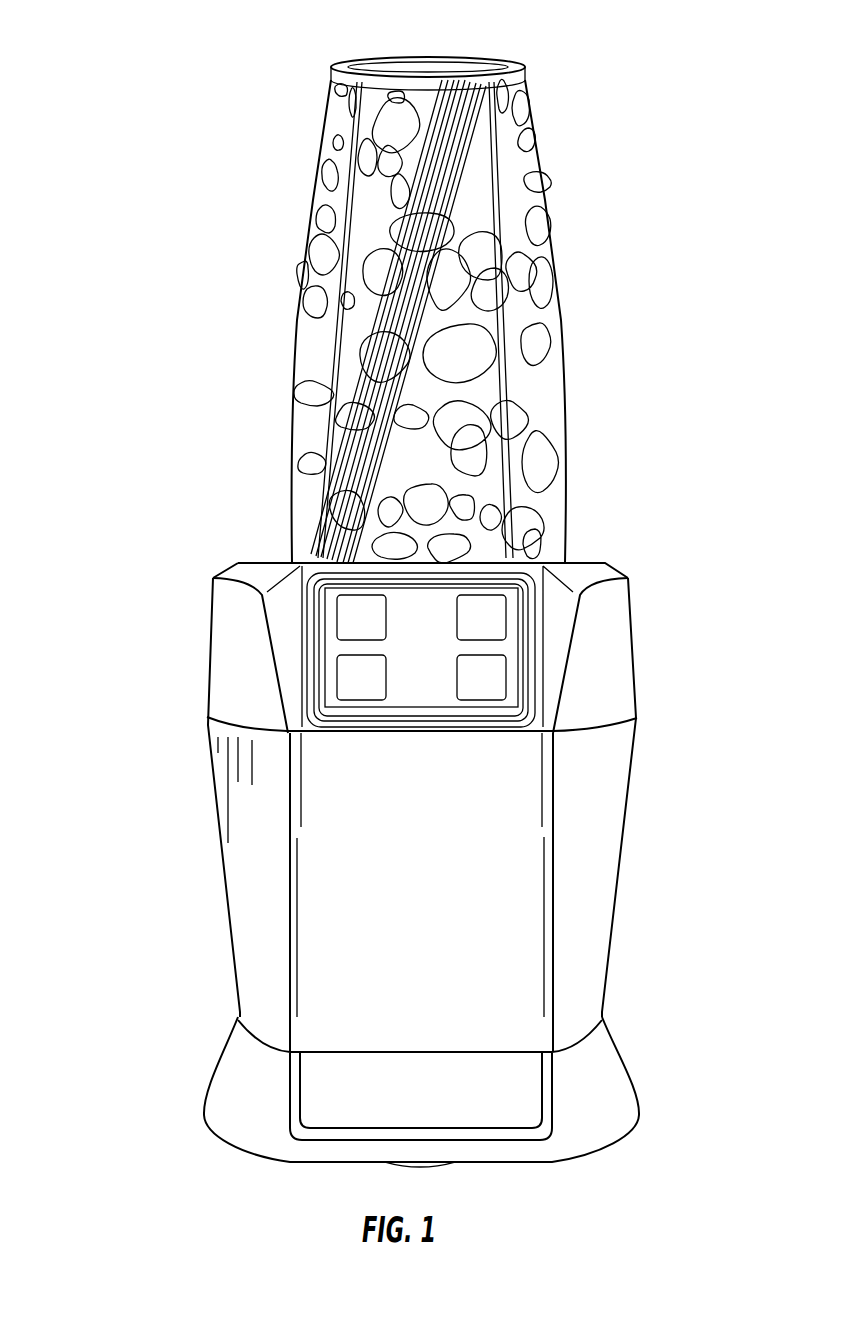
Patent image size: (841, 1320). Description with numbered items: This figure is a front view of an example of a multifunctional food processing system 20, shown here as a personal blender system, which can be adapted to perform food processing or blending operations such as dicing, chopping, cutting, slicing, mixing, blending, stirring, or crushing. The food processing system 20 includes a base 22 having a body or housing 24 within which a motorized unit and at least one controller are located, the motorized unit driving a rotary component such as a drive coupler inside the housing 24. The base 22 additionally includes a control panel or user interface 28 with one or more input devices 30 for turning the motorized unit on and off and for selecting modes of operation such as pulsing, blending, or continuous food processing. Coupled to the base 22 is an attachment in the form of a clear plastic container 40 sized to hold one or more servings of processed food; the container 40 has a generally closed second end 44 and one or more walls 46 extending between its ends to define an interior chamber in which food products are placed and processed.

The food processing system 20 is at (245, 102).
The base 22 is at (145, 715).
The housing 24 is at (250, 790).
The user interface 28 is at (417, 660).
The input devices 30 is at (498, 617).
The container 40 is at (242, 307).
The second end 44 is at (450, 62).
The walls 46 is at (500, 325).